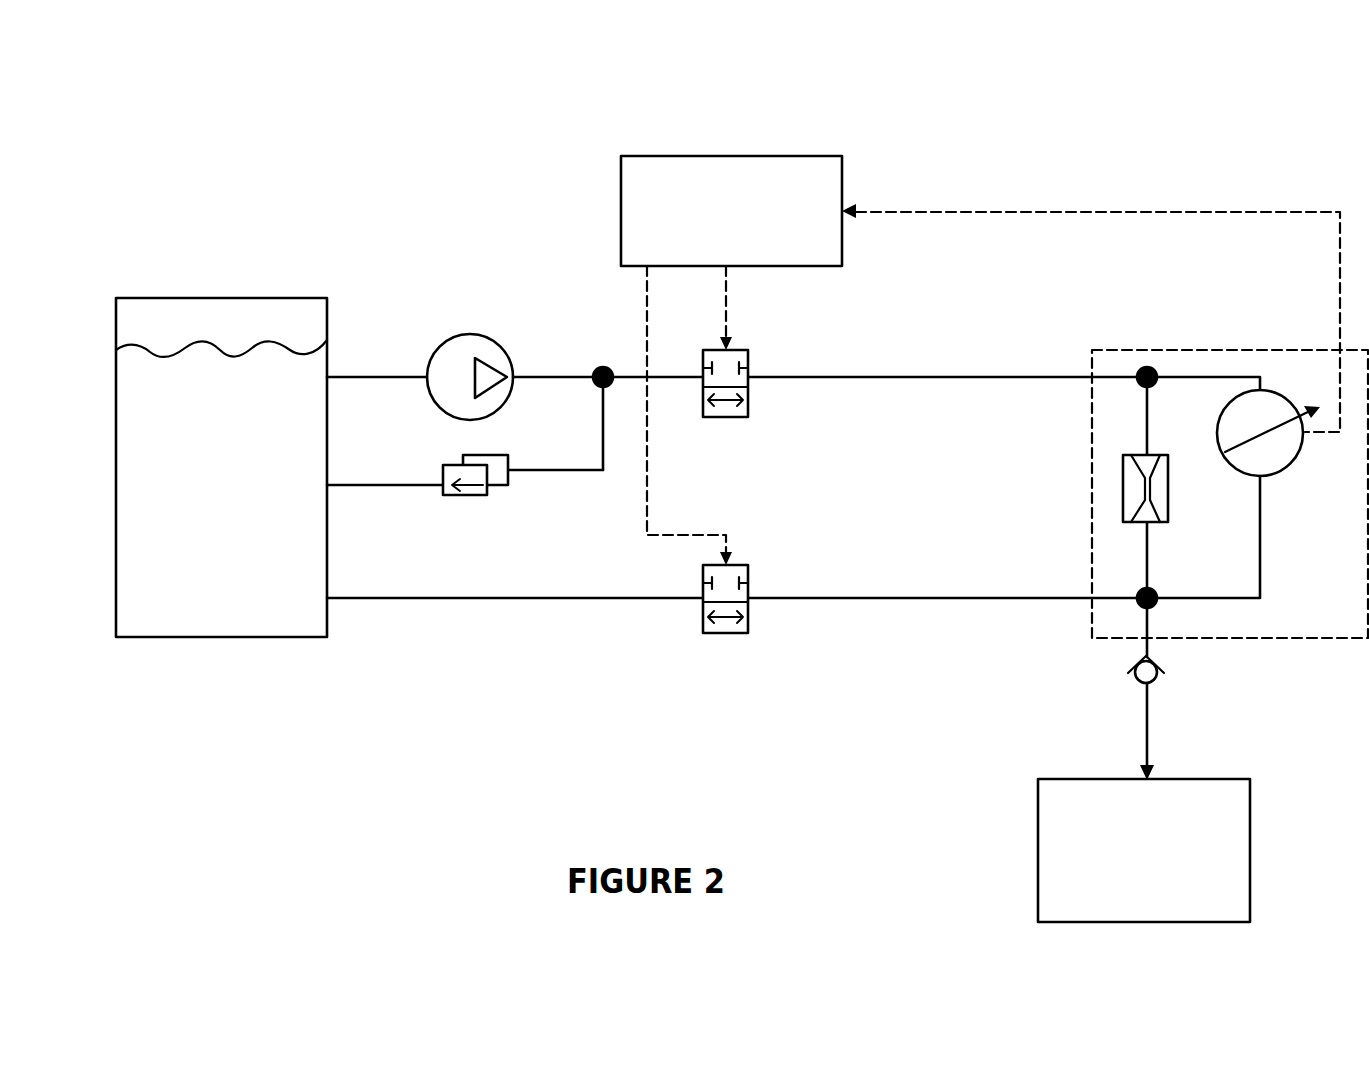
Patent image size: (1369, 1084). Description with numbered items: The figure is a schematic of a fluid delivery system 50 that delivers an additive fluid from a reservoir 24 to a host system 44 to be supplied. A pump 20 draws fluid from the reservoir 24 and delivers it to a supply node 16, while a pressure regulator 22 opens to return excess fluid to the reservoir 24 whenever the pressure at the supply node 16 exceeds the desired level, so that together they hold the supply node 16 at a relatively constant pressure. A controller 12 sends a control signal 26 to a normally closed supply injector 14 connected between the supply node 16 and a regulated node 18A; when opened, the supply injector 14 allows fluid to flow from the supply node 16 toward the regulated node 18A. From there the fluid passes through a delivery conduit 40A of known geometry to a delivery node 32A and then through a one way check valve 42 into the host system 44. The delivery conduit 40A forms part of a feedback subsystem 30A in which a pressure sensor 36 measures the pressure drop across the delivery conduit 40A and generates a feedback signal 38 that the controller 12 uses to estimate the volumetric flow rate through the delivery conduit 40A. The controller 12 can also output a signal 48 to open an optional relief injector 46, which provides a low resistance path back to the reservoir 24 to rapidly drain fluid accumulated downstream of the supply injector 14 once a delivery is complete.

The fluid delivery system 50 is at (293, 178).
The controller 12 is at (729, 156).
The supply injector 14 is at (726, 418).
The supply node 16 is at (595, 372).
The regulated node 18A is at (1157, 371).
The pump 20 is at (470, 335).
The pressure regulator 22 is at (460, 496).
The reservoir 24 is at (215, 637).
The control signal 26 is at (726, 321).
The feedback subsystem 30A is at (1090, 558).
The delivery node 32A is at (1157, 603).
The pressure sensor 36 is at (1293, 470).
The feedback signal 38 is at (1068, 212).
The delivery conduit 40A is at (1123, 487).
The check valve 42 is at (1135, 680).
The host system 44 is at (1038, 850).
The relief injector 46 is at (726, 634).
The signal 48 is at (647, 320).